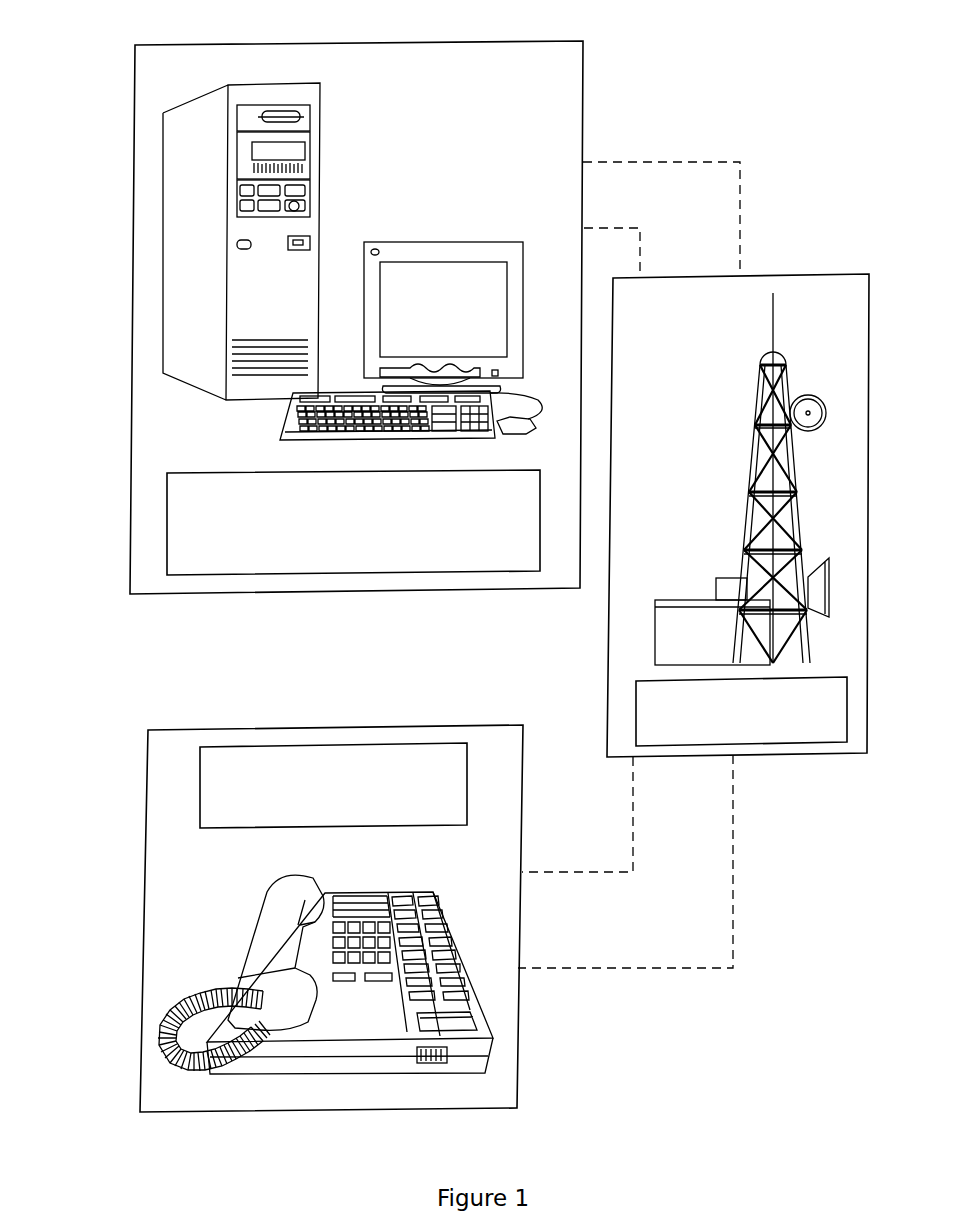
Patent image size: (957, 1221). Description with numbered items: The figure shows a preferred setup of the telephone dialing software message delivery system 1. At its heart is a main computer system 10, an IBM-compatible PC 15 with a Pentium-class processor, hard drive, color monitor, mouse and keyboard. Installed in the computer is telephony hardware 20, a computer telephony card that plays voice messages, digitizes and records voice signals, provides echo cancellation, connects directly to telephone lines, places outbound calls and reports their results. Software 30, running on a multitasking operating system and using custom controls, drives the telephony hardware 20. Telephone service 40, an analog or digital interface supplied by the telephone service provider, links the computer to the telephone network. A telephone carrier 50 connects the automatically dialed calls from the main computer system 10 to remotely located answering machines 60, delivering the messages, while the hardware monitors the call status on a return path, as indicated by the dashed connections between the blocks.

The telephone messaging system 1 is at (84, 310).
The main computer system 10 is at (168, 79).
The PC 15 is at (460, 252).
The telephony hardware 20 is at (307, 120).
The software 30 is at (307, 173).
The telephone service 40 is at (307, 212).
The telephone carrier 50 is at (846, 320).
The answering machines 60 is at (190, 891).